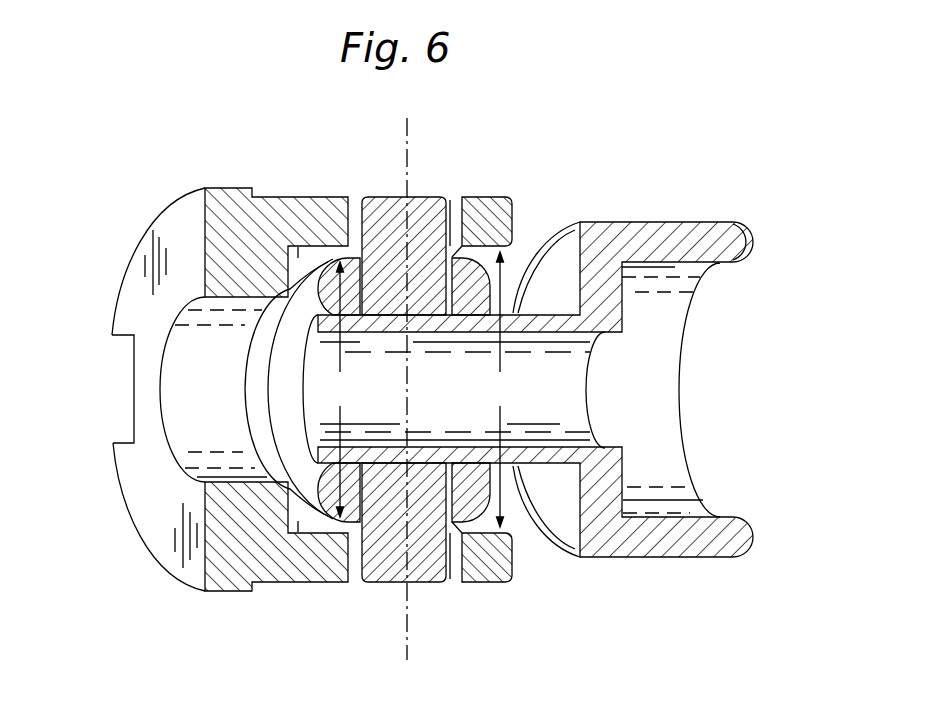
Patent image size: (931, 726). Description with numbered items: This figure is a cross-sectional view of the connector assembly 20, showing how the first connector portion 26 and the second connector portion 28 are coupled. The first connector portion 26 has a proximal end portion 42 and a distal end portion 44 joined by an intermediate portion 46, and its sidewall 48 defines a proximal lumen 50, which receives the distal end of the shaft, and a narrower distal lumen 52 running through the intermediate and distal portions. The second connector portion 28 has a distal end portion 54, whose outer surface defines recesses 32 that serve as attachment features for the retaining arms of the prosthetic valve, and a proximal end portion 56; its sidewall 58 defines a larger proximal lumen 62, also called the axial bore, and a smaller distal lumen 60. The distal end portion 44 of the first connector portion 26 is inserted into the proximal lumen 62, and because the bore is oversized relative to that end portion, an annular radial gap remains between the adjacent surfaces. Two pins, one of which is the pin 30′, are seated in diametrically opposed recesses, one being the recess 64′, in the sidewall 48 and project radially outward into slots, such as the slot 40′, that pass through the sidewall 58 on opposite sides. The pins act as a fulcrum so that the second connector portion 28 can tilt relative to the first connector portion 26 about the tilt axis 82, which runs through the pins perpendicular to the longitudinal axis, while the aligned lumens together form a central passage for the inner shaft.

The connector assembly 20 is at (650, 138).
The first connector portion 26 is at (733, 215).
The second connector portion 28 is at (322, 196).
The pin 30′ is at (415, 200).
The recesses 32 is at (132, 370).
The slot 40′ is at (453, 198).
The proximal end portion 42 is at (700, 559).
The distal end portion 44 is at (474, 507).
The intermediate portion 46 is at (550, 522).
The sidewall 48 is at (743, 243).
The proximal lumen 50 is at (662, 393).
The distal lumen 52 is at (565, 370).
The distal end portion 54 is at (222, 591).
The proximal end portion 56 is at (473, 584).
The sidewall 58 is at (508, 198).
The distal lumen 60 is at (190, 403).
The proximal lumen 62 is at (292, 197).
The recess 64′ is at (444, 317).
The tilt axis 82 is at (406, 409).